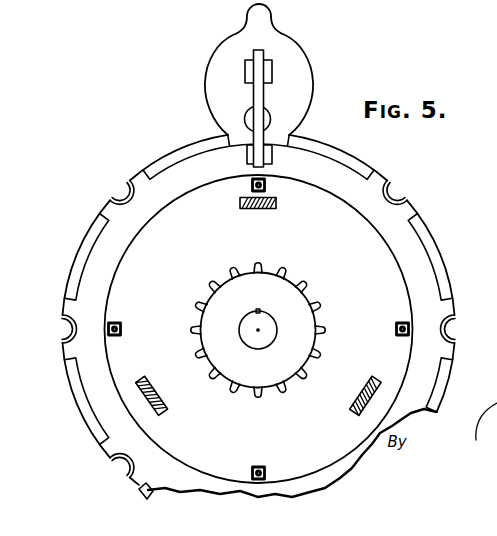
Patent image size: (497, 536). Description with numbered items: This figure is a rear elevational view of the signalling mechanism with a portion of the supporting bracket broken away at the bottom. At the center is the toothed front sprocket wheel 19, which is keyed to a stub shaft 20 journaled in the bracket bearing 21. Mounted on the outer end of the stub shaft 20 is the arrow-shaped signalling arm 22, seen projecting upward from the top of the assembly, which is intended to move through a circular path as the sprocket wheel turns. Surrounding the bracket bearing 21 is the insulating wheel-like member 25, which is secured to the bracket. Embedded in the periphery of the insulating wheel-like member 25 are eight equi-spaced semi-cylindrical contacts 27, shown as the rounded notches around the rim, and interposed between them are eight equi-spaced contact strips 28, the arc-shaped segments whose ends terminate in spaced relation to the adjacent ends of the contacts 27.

The front sprocket wheel 19 is at (258, 330).
The stub shaft 20 is at (266, 342).
The bracket bearing 21 is at (259, 329).
The arrow-shaped signalling arm 22 is at (208, 77).
The insulating wheel-like member 25 is at (86, 257).
The semi-cylindrical contacts 27 is at (409, 191).
The contact strips 28 is at (62, 294).